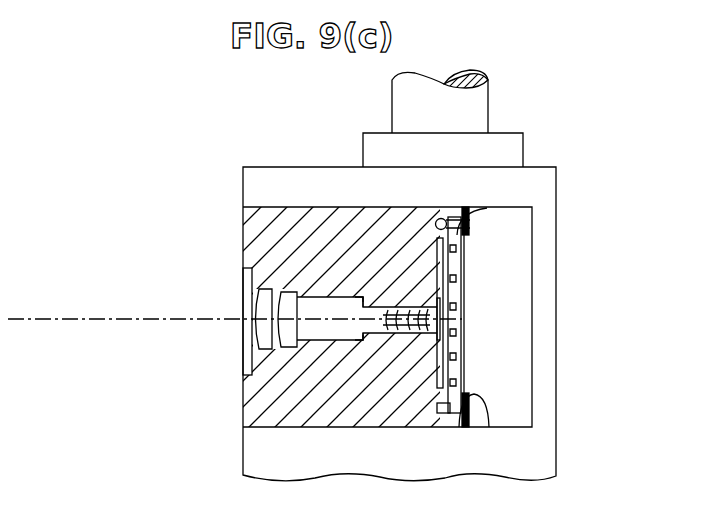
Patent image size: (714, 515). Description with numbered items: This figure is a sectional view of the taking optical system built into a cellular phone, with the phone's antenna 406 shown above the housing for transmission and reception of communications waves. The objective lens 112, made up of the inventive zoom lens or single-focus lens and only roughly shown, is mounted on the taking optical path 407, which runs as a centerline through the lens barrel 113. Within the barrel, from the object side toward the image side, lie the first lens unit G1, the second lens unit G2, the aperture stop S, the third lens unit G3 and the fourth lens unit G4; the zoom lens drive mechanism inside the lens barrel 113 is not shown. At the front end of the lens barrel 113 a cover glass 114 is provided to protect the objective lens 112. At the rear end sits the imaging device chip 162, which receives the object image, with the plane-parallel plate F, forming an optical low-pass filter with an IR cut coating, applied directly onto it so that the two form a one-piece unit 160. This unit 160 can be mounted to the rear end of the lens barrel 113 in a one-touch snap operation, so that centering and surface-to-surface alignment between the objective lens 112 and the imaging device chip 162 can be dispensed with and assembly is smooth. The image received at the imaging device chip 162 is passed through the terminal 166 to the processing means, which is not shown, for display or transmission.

The antenna 406 is at (477, 103).
The taking optical path 407 is at (57, 319).
The lens barrel 113 is at (316, 215).
The cover glass 114 is at (242, 300).
The objective lens 112 is at (243, 340).
The plane-parallel plate (optical low-pass filter) F is at (437, 300).
The first lens unit G1 is at (265, 350).
The second lens unit G2 is at (290, 348).
The aperture stop S is at (363, 333).
The third lens unit G3 is at (404, 334).
The fourth lens unit G4 is at (438, 342).
The imaging device chip 162 is at (444, 320).
The terminal 166 is at (470, 250).
The one-piece unit 160 is at (493, 368).